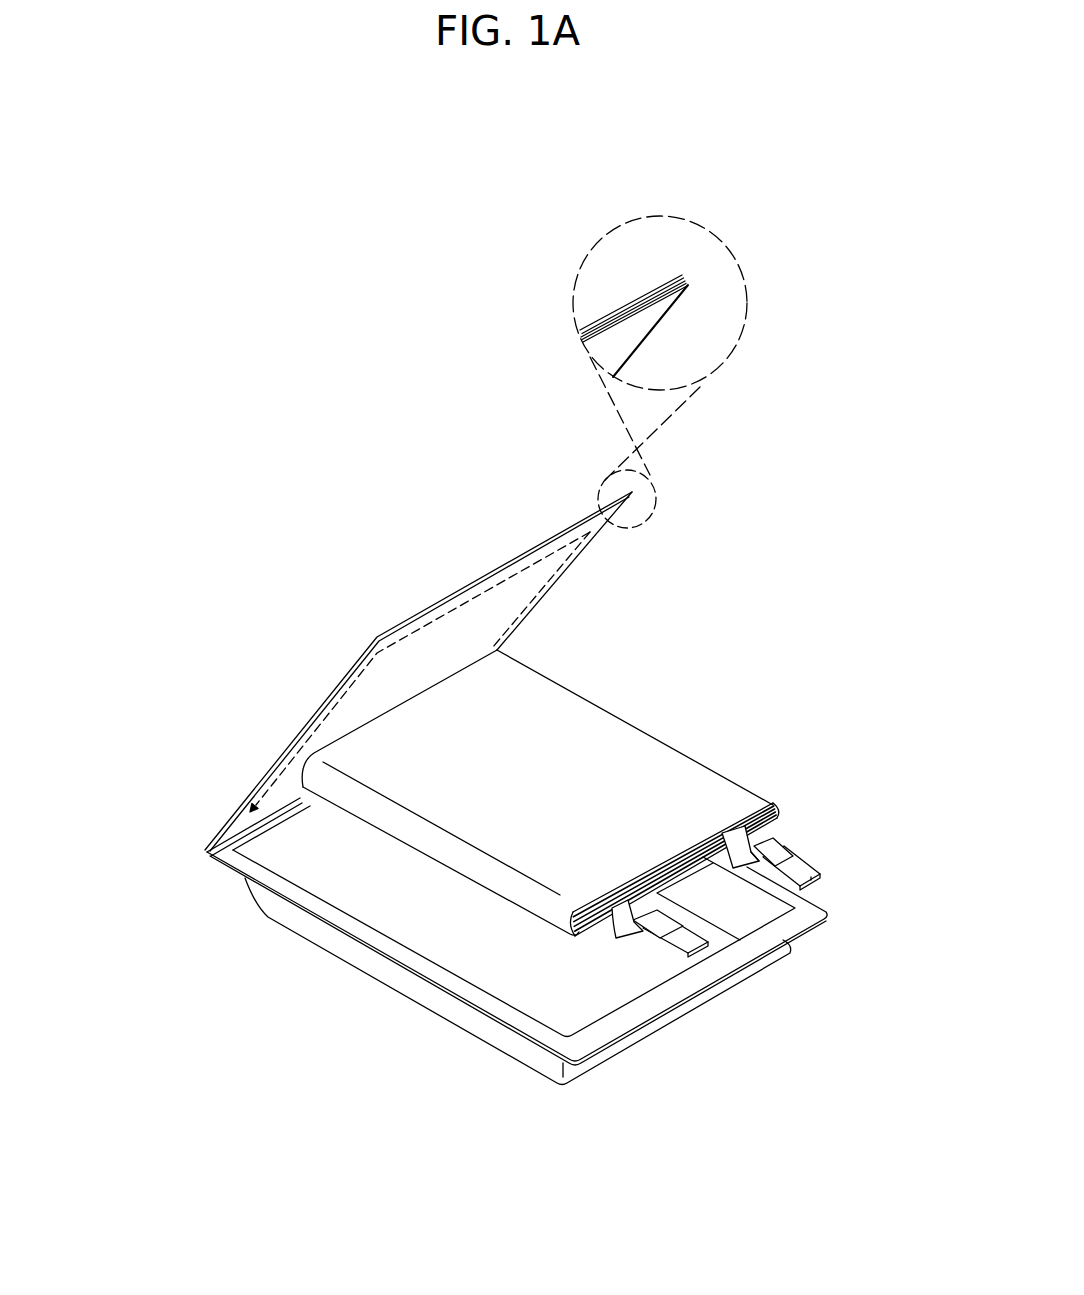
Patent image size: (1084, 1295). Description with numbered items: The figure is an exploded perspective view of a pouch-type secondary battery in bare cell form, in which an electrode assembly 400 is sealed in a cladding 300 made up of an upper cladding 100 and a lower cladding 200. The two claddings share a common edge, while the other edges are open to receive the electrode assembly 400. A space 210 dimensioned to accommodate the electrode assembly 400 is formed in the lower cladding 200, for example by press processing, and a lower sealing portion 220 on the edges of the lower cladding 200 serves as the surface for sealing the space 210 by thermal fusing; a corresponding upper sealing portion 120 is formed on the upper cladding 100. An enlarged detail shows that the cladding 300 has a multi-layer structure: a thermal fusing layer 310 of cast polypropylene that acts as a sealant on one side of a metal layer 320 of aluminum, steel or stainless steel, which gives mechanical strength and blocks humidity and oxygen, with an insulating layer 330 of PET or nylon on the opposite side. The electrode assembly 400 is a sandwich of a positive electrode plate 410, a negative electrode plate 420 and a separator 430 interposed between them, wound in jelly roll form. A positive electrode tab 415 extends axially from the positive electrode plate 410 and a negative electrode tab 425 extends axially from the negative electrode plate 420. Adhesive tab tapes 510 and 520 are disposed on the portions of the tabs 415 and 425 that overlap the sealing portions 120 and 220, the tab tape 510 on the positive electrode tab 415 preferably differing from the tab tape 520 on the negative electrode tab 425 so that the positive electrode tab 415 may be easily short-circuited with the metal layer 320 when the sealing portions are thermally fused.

The upper cladding 100 is at (382, 671).
The upper sealing portion 120 is at (296, 747).
The lower cladding 200 is at (480, 974).
The space 210 is at (485, 962).
The lower sealing portion 220 is at (507, 1020).
The cladding 300 is at (131, 792).
The thermal fusing layer 310 is at (693, 280).
The metal layer 320 is at (692, 277).
The insulating layer 330 is at (683, 275).
The electrode assembly 400 is at (607, 685).
The positive electrode plate 410 is at (799, 775).
The positive electrode tab 415 is at (690, 940).
The negative electrode plate 420 is at (776, 818).
The negative electrode tab 425 is at (811, 878).
The separator 430 is at (776, 813).
The tab tape 510 is at (663, 933).
The tab tape 520 is at (805, 850).